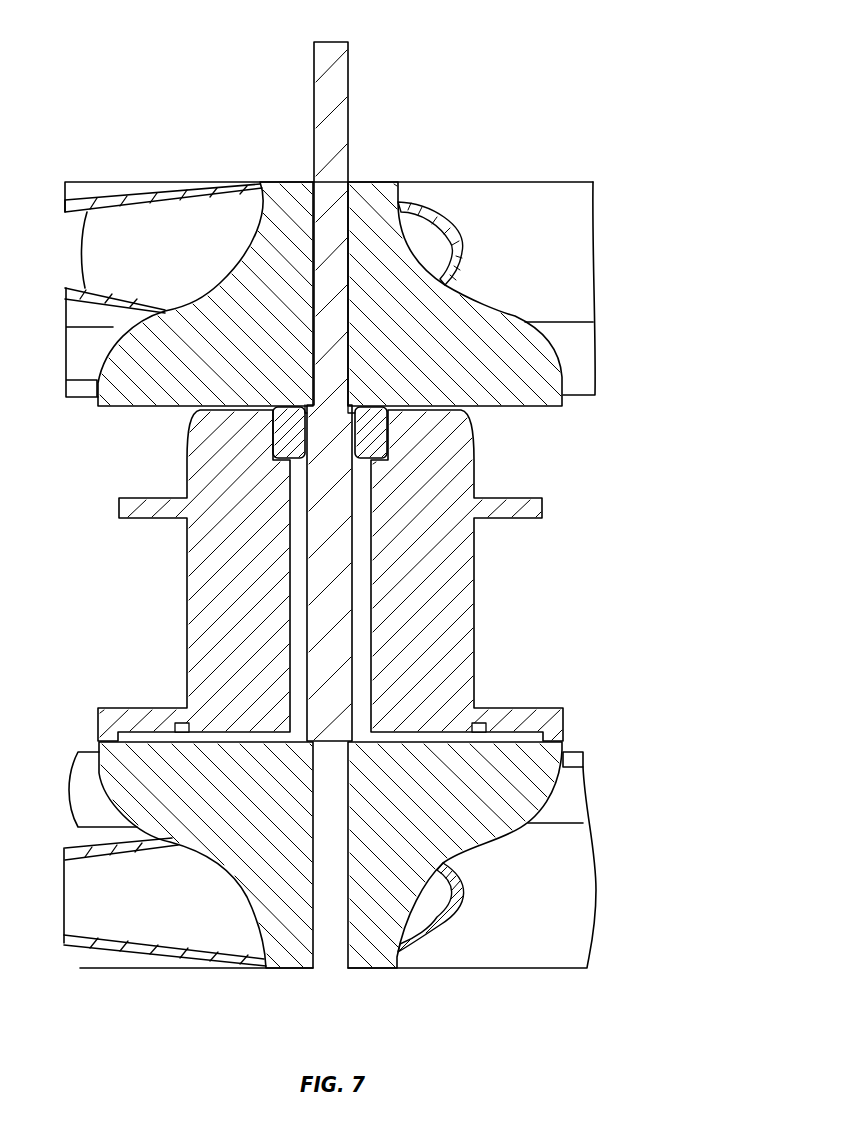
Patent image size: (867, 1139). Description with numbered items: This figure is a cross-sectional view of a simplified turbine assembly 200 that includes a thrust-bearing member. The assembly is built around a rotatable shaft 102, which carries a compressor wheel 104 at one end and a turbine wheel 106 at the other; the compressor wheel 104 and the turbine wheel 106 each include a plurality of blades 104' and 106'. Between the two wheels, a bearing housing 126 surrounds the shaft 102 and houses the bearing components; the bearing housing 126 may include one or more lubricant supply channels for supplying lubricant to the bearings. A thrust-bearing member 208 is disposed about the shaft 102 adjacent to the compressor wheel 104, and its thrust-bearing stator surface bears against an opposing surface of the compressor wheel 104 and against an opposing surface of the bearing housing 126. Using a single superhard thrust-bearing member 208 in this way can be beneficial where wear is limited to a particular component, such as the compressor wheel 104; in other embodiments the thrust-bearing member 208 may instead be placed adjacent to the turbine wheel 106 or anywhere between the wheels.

The turbine assembly 200 is at (631, 56).
The rotatable shaft 102 is at (340, 80).
The compressor wheel 104 is at (316, 262).
The blades 104' is at (387, 289).
The bearing housing 126 is at (457, 595).
The thrust-bearing member 208 is at (275, 425).
The turbine wheel 106 is at (404, 855).
The blades 106' is at (383, 860).